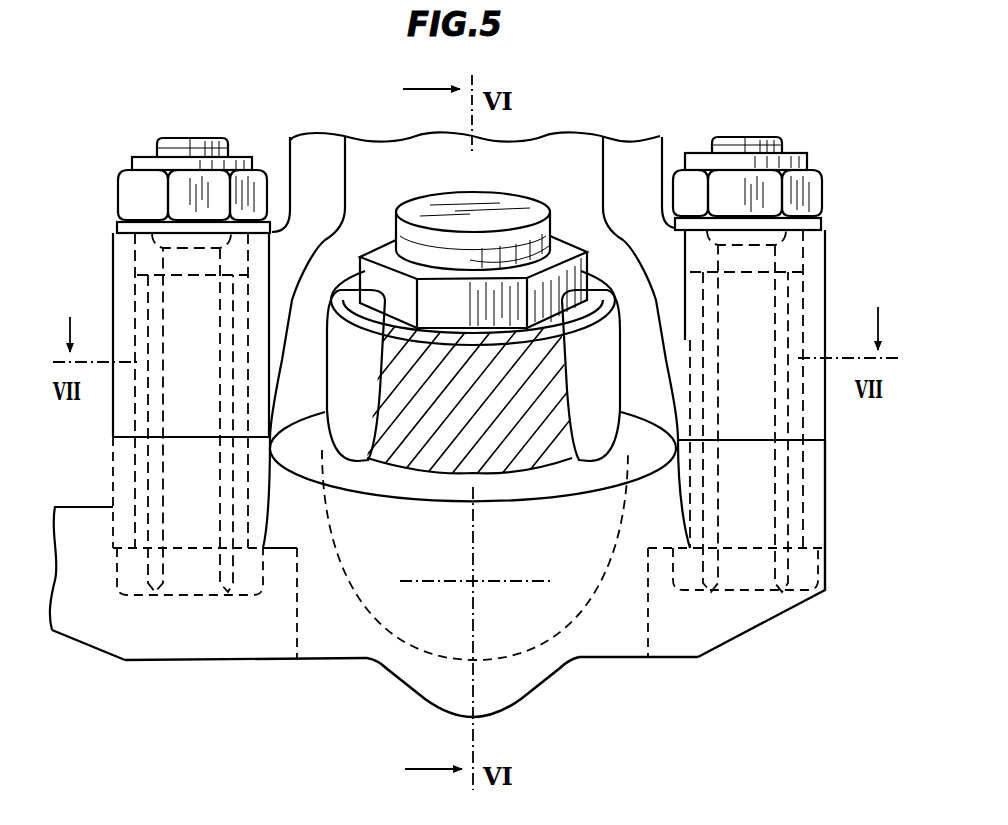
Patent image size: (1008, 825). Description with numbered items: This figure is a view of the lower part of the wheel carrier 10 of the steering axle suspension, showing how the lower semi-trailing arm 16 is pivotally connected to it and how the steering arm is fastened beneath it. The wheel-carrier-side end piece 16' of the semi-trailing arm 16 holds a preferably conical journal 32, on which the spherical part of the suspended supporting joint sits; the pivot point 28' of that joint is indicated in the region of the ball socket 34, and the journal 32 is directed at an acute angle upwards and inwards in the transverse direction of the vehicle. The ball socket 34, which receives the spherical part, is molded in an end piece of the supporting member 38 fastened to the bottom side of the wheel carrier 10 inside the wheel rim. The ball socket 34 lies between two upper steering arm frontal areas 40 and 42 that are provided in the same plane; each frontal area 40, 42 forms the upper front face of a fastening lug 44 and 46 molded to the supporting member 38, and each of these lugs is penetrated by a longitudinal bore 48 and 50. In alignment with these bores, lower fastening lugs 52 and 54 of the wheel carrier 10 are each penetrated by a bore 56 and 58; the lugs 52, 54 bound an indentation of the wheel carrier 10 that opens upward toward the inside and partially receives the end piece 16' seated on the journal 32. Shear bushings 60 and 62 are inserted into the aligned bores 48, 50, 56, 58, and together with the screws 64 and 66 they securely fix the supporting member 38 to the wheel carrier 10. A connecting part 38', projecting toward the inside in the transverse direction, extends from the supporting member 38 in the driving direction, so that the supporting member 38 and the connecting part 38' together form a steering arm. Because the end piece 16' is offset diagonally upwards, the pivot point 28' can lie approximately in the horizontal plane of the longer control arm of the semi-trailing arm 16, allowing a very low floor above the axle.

The wheel carrier 10 is at (662, 155).
The semi-trailing arm 16 is at (606, 374).
The wheel-carrier-side end piece of the semi-trailing arm 16' is at (344, 374).
The pivot point of the supporting joint 28' is at (475, 555).
The journal 32 is at (507, 203).
The ball socket 34 is at (584, 600).
The supporting member 38 is at (411, 695).
The connecting part 38' is at (88, 679).
The upper steering arm frontal area 40 is at (825, 432).
The upper steering arm frontal area 42 is at (113, 437).
The fastening lug 44 is at (820, 523).
The fastening lug 46 is at (120, 512).
The longitudinal bore 48 is at (786, 524).
The longitudinal bore 50 is at (140, 492).
The lower fastening lug 52 is at (825, 300).
The lower fastening lug 54 is at (118, 277).
The bore 56 is at (810, 322).
The bore 58 is at (143, 340).
The shear bushing 60 is at (803, 280).
The shear bushing 62 is at (147, 280).
The screw 64 is at (755, 140).
The screw 66 is at (188, 148).